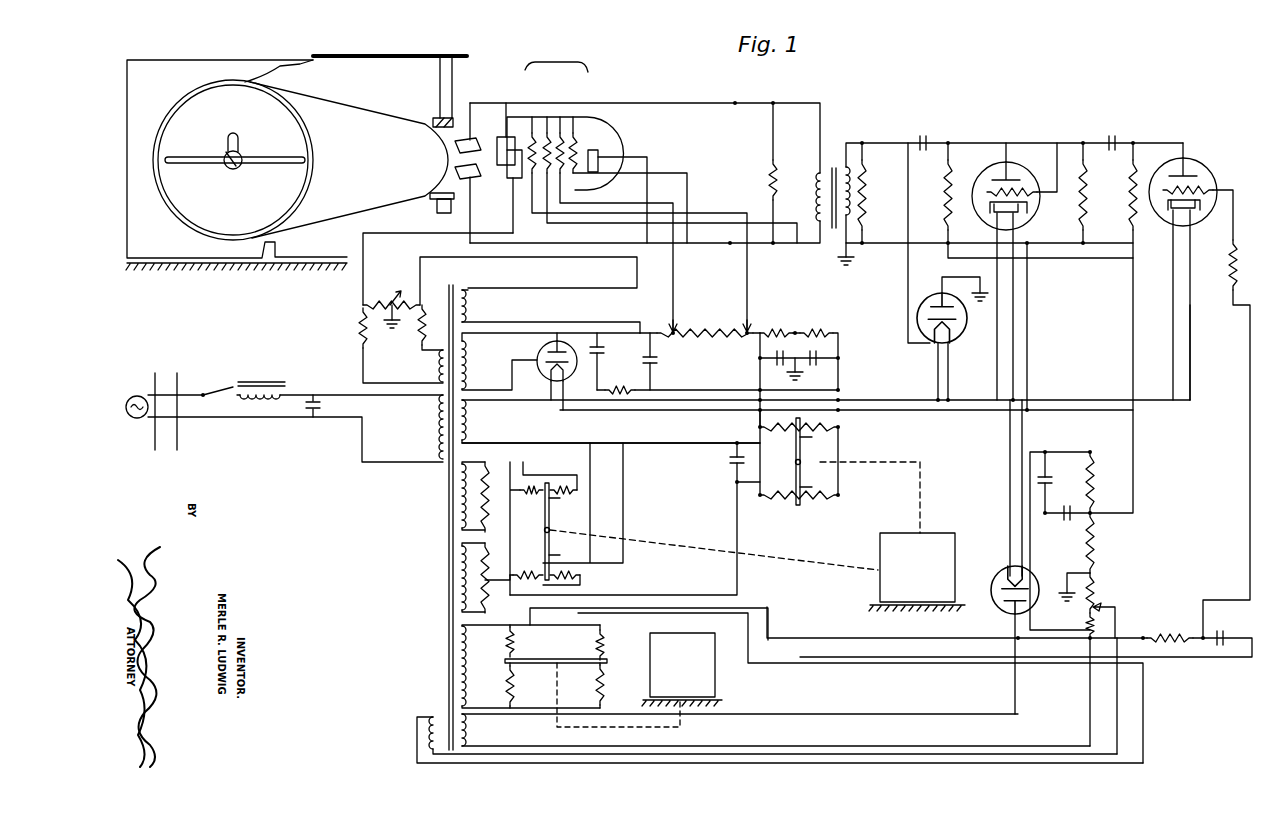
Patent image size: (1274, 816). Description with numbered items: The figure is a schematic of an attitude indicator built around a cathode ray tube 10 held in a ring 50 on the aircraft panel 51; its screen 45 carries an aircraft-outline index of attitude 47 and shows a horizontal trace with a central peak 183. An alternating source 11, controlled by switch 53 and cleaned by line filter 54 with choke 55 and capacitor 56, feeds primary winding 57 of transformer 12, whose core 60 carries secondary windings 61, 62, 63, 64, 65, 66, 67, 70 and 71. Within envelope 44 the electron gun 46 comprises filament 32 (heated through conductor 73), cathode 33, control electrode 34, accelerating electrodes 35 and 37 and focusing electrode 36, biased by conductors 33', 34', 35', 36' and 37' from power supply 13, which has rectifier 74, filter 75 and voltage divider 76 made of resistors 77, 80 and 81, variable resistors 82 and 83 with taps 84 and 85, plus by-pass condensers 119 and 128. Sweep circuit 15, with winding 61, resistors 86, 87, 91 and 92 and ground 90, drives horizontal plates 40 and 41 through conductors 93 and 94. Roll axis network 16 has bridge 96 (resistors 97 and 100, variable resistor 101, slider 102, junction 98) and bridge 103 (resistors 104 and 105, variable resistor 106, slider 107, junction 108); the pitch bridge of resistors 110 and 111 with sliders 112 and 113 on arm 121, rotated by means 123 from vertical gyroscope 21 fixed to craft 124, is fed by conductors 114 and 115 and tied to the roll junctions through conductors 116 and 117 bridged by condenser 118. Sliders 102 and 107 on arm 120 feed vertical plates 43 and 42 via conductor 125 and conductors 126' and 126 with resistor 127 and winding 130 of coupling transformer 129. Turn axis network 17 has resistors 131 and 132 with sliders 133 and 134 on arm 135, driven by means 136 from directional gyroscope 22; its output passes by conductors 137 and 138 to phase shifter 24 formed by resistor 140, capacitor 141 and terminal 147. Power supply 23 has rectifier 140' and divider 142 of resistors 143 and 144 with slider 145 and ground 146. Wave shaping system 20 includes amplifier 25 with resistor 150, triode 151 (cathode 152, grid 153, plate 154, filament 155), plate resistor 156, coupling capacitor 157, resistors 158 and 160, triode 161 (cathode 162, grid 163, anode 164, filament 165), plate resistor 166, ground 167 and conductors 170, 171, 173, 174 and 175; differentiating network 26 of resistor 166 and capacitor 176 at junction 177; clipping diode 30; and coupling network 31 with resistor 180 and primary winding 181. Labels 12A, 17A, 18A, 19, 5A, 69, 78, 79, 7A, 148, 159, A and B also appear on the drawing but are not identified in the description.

The cathode ray oscilloscope tube 10 is at (417, 106).
The source of electrical energy 11 is at (137, 394).
The transformer 12 is at (397, 574).
The roll axis 12A is at (726, 548).
The unidirectional voltage power supply 13 is at (698, 373).
The sweep circuit 15 is at (400, 356).
The roll axis network 16 is at (532, 536).
The turn axis network 17 is at (560, 644).
The return conductor 17A is at (1145, 726).
The pointer 18A is at (276, 156).
The pitch commutator 19 is at (786, 464).
The wave shaping system 20 is at (1073, 330).
The vertical gyroscope 21 is at (950, 583).
The directional gyroscope 22 is at (715, 680).
The power supply 23 is at (998, 523).
The phase shifter 24 is at (1188, 627).
The two-stage wave squaring amplifier 25 is at (1110, 189).
The differentiating network 26 is at (934, 188).
The clipping tube 30 is at (955, 318).
The coupling network 31 is at (843, 127).
The heating filament 32 is at (612, 120).
The electron emissive cathode 33 is at (617, 161).
The control electrode 34 is at (628, 161).
The first accelerating electrode 35 is at (614, 201).
The focusing electrode 36 is at (670, 163).
The second accelerating electrode 37 is at (637, 206).
The conductor 33' is at (678, 163).
The conductor 34' is at (666, 189).
The conductor 35' is at (741, 200).
The conductor 36' is at (704, 206).
The conductor 37' is at (527, 227).
The horizontally effective deflecting plate 40 is at (502, 136).
The horizontally effective deflecting plate 41 is at (511, 180).
The vertically effective deflecting plate 42 is at (468, 138).
The vertically effective deflecting plate 43 is at (472, 180).
The glass envelope 44 is at (342, 118).
The fluorescent screen 45 is at (233, 160).
The electron gun 46 is at (565, 64).
The index of attitude 47 is at (240, 150).
The ring 50 is at (432, 198).
The panel 51 is at (237, 159).
The switch 53 is at (211, 385).
The line filter 54 is at (293, 374).
The choke 55 is at (262, 402).
The capacitor 56 is at (310, 412).
The primary winding 57 is at (438, 425).
The belt guide 5A is at (250, 84).
The core 60 is at (455, 288).
The secondary winding 61 is at (438, 362).
The secondary winding 62 is at (470, 298).
The secondary winding 63 is at (470, 358).
The secondary winding 64 is at (470, 414).
The secondary winding 65 is at (458, 490).
The secondary winding 66 is at (458, 584).
The secondary winding 67 is at (458, 662).
The conductor 69 is at (645, 382).
The secondary winding 70 is at (472, 732).
The secondary winding 71 is at (428, 720).
The conductor 73 is at (605, 322).
The electronic rectifier 74 is at (598, 347).
The resistance-capacitance filter 75 is at (628, 374).
The voltage divider 76 is at (724, 319).
The fixed resistor 77 is at (709, 336).
The conductor 78 is at (595, 365).
The capacitor 79 is at (647, 362).
The conductor 7A is at (562, 288).
The fixed resistor 80 is at (778, 331).
The fixed resistor 81 is at (818, 331).
The variable resistor 82 is at (680, 336).
The variable resistor 83 is at (744, 336).
The tap 84 is at (672, 318).
The tap 85 is at (748, 318).
The voltage dropping resistor 86 is at (360, 320).
The voltage dropping resistor 87 is at (424, 304).
The ground connection 90 is at (397, 316).
The load resistor 91 is at (376, 302).
The load resistor 92 is at (399, 289).
The conductor 93 is at (410, 233).
The conductor 94 is at (623, 133).
The electric bridge 96 is at (533, 512).
The fixed resistor 97 is at (458, 468).
The junction 98 is at (505, 470).
The fixed resistor 100 is at (458, 518).
The variable resistor 101 is at (577, 485).
The sliding contact 102 is at (556, 500).
The second bridge 103 is at (538, 564).
The fixed resistor 104 is at (458, 556).
The fixed resistor 105 is at (458, 598).
The variable resistor 106 is at (582, 574).
The sliding contact 107 is at (560, 552).
The junction 108 is at (490, 575).
The variable resistor 110 is at (818, 426).
The variable resistor 111 is at (820, 492).
The slider 112 is at (817, 436).
The slider 113 is at (804, 490).
The conductor 114 is at (760, 375).
The conductor 115 is at (838, 363).
The conductor 116 is at (692, 442).
The conductor 117 is at (738, 518).
The by-pass condenser 118 is at (730, 468).
The condenser 119 is at (780, 362).
The pivoted arm 120 is at (552, 531).
The pivoted arm 121 is at (801, 461).
The means 123 is at (922, 492).
The fixed portion of the craft 124 is at (165, 268).
The conductor 125 is at (590, 461).
The conductor 126 is at (645, 392).
The conductor 126' is at (645, 121).
The fixed resistor 127 is at (770, 178).
The condenser 128 is at (800, 352).
The coupling transformer 129 is at (840, 160).
The secondary winding 130 is at (818, 190).
The variable resistor 131 is at (508, 640).
The variable resistor 132 is at (603, 645).
The slider 133 is at (518, 664).
The slider 134 is at (599, 684).
The pivoted arm 135 is at (555, 664).
The means 136 is at (682, 728).
The conductor 137 is at (845, 658).
The conductor 138 is at (888, 663).
The resistor 140 is at (1009, 638).
The electronic rectifier 140' is at (1002, 557).
The capacitor 141 is at (1070, 473).
The voltage divider 142 is at (1110, 555).
The fixed resistor 143 is at (1085, 543).
The variable resistor 144 is at (1094, 592).
The slider 145 is at (1102, 606).
The ground connection 146 is at (1066, 578).
The common terminal 147 is at (1206, 636).
The resistor 148 is at (1093, 498).
The grid protective resistor 150 is at (1230, 272).
The triode 151 is at (1213, 160).
The cathode 152 is at (1168, 208).
The grid 153 is at (1165, 188).
The plate 154 is at (1182, 150).
The heater filament 155 is at (1232, 232).
The plate resistor 156 is at (1130, 202).
The coupling capacitor 157 is at (1116, 137).
The input resistor 158 is at (1085, 142).
The capacitor 159 is at (1067, 510).
The grid protective resistor 160 is at (1080, 206).
The triode 161 is at (1032, 155).
The cathode 162 is at (985, 205).
The grid 163 is at (985, 190).
The anode 164 is at (1005, 150).
The heater filament 165 is at (1020, 214).
The plate resistor 166 is at (945, 203).
The ground connection 167 is at (852, 258).
The conductor 170 is at (1234, 210).
The conductor 171 is at (1248, 453).
The conductor 173 is at (1120, 704).
The conductor 174 is at (1133, 363).
The conductor 175 is at (1046, 260).
The capacitor 176 is at (926, 136).
The junction 177 is at (906, 140).
The resistor 180 is at (866, 190).
The primary winding 181 is at (877, 193).
The central peak 183 is at (226, 152).
The terminal A is at (736, 102).
The terminal B is at (730, 245).